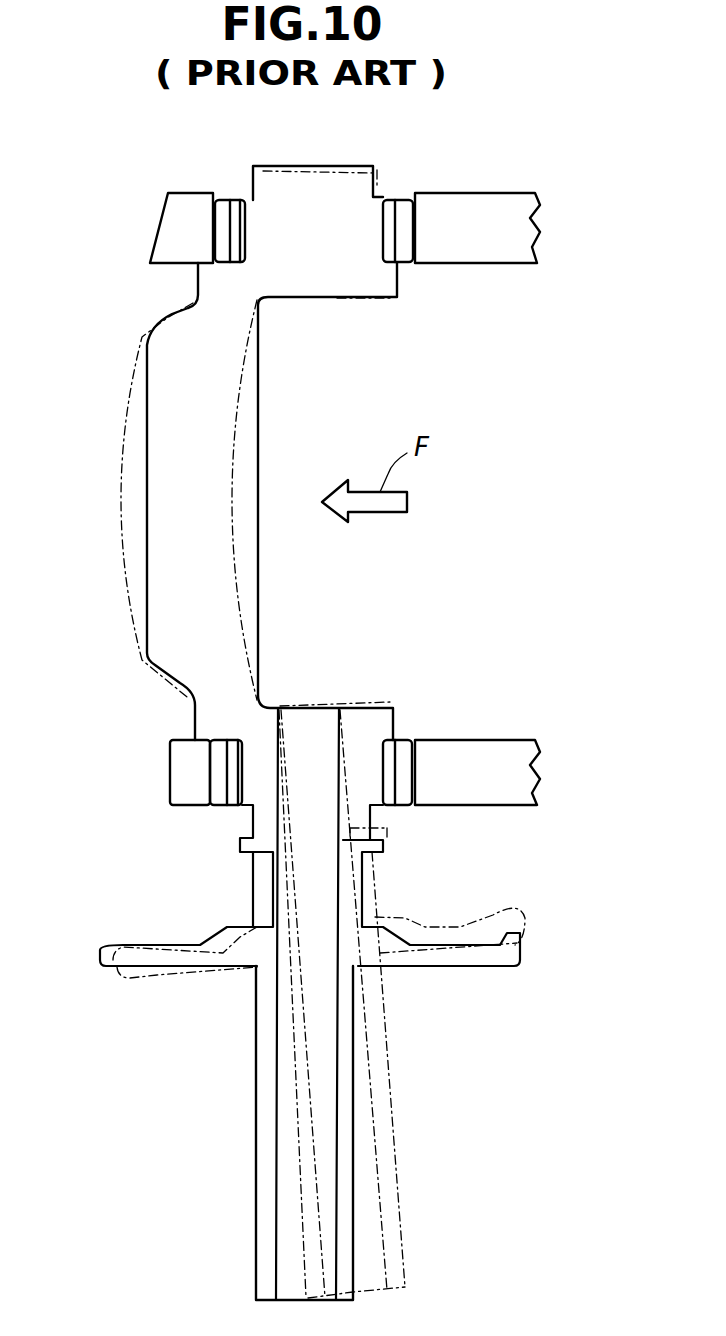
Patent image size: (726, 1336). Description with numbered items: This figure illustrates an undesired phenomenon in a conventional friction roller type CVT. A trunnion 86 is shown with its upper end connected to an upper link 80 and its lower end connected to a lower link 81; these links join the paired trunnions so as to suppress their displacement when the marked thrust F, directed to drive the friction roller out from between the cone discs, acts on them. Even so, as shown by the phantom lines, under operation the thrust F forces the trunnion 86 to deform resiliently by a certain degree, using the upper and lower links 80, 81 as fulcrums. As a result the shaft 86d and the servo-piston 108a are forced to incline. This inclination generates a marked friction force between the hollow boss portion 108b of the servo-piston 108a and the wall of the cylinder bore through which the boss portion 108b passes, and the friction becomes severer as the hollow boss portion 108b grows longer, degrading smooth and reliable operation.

The upper link 80 is at (163, 225).
The lower link 81 is at (170, 755).
The trunnion 86 is at (145, 364).
The shaft 86d is at (317, 1038).
The servo-piston 108a is at (170, 945).
The hollow boss portion 108b is at (265, 1085).